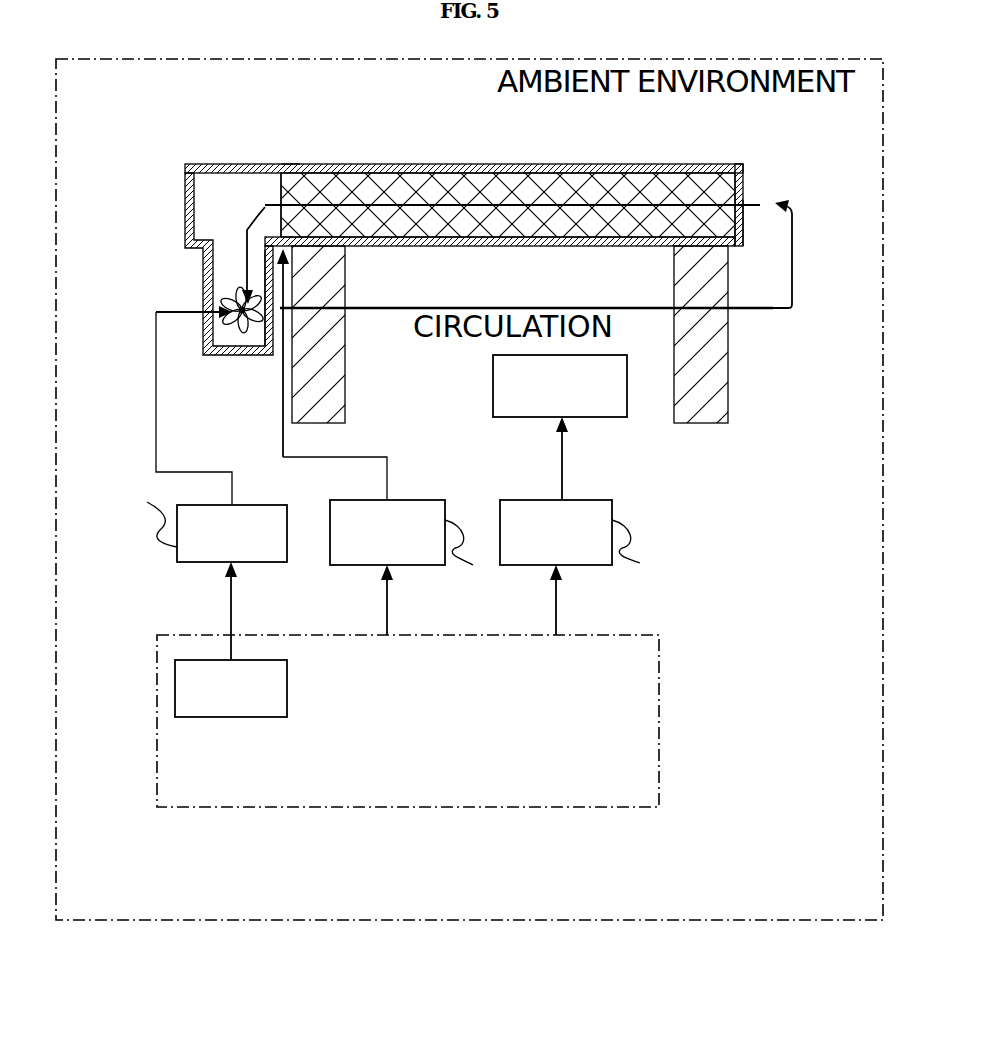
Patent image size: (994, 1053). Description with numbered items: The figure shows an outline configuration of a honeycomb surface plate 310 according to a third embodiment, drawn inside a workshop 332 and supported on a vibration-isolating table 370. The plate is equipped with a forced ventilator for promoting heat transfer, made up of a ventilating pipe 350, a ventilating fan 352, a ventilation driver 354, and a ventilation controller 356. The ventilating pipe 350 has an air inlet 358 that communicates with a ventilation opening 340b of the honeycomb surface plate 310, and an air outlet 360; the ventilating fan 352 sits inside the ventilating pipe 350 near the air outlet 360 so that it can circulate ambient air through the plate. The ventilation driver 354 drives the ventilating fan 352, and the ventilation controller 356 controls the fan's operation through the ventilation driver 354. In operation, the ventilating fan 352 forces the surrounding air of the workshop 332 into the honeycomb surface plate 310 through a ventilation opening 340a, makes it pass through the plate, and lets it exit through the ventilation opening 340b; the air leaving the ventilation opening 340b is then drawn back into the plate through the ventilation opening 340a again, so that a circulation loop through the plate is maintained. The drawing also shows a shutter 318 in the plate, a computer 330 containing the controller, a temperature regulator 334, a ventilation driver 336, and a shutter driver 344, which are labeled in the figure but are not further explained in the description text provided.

The honeycomb surface plate 310 is at (464, 164).
The shutter 318 is at (759, 204).
The computer 330 is at (175, 635).
The workshop 332 is at (143, 922).
The temperature regulator 334 is at (593, 418).
The ventilation driver 336 is at (530, 500).
The ventilation opening 340a is at (747, 208).
The ventilation opening 340b is at (288, 173).
The shutter driver 344 is at (412, 500).
The ventilating pipe 350 is at (175, 205).
The ventilating fan 352 is at (230, 332).
The ventilation driver 354 is at (247, 505).
The ventilation controller 356 is at (287, 685).
The air inlet 358 is at (279, 172).
The air outlet 360 is at (265, 337).
The vibration-isolating table 370 is at (345, 375).